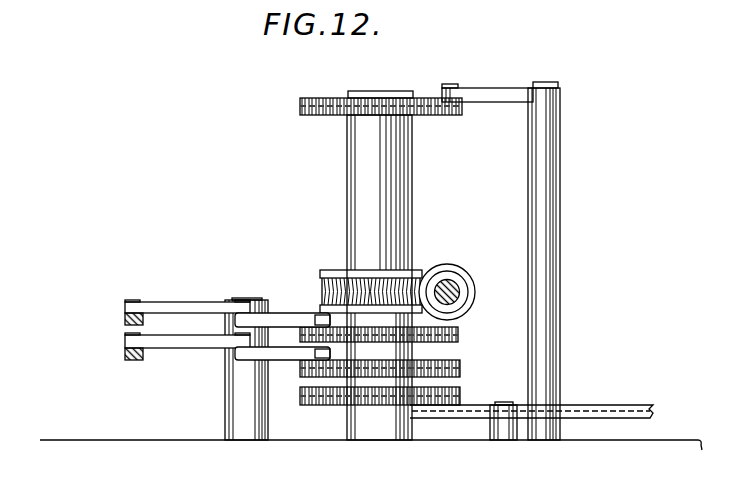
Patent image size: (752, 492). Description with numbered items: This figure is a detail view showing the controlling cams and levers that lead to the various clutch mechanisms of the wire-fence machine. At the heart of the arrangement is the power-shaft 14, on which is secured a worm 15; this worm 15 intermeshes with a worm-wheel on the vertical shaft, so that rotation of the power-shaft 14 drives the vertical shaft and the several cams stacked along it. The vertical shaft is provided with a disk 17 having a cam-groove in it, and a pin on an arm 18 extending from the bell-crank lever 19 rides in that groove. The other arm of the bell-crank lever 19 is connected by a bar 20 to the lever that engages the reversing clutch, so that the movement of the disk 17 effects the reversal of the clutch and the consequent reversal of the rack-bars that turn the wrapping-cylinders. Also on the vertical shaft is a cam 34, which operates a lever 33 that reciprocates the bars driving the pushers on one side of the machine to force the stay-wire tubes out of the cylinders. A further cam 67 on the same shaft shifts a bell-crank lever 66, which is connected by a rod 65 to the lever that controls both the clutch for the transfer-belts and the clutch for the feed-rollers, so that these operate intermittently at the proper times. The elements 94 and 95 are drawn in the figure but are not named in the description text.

The ratchet disc 95 is at (330, 94).
The arm 94 is at (494, 92).
The arm 18 is at (343, 277).
The worm 15 is at (442, 267).
The power-shaft 14 is at (455, 298).
The cam 67 is at (460, 345).
The disk 17 is at (460, 368).
The cam 34 is at (318, 404).
The lever 33 is at (601, 411).
The bell-crank lever 66 is at (193, 302).
The rod 65 is at (125, 318).
The bell-crank lever 19 is at (198, 348).
The bar 20 is at (125, 354).